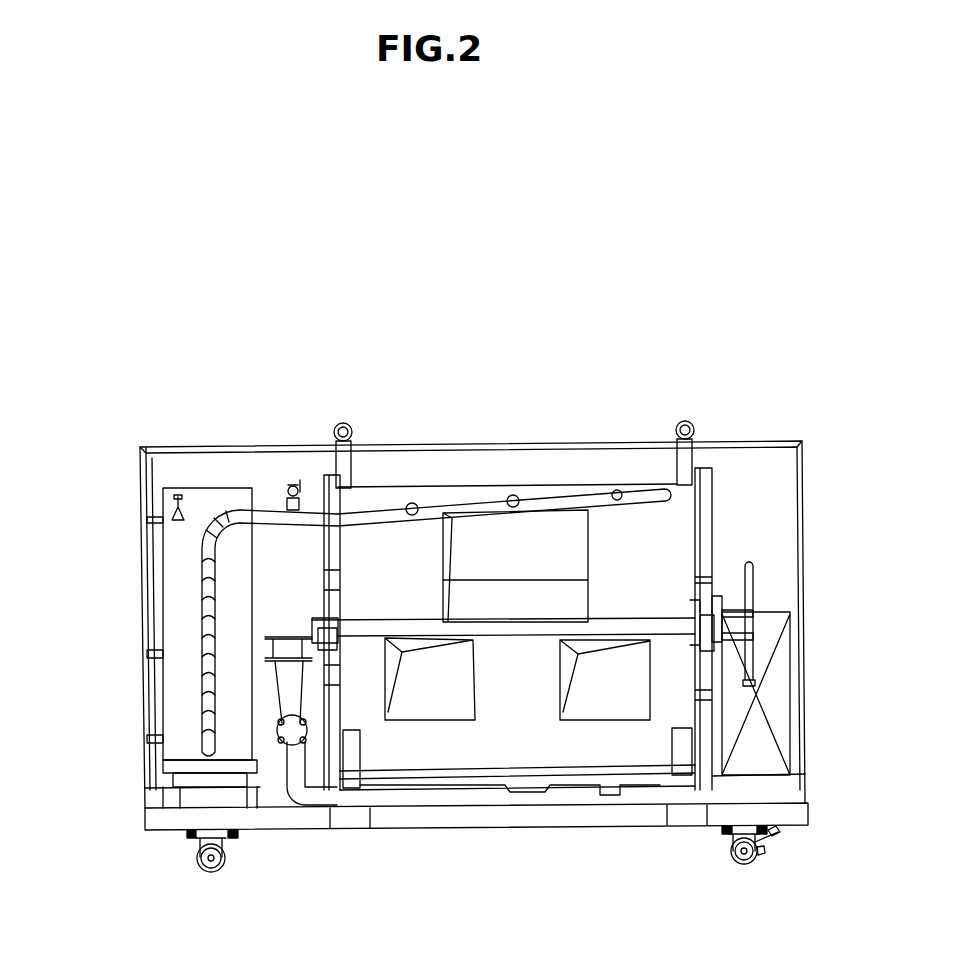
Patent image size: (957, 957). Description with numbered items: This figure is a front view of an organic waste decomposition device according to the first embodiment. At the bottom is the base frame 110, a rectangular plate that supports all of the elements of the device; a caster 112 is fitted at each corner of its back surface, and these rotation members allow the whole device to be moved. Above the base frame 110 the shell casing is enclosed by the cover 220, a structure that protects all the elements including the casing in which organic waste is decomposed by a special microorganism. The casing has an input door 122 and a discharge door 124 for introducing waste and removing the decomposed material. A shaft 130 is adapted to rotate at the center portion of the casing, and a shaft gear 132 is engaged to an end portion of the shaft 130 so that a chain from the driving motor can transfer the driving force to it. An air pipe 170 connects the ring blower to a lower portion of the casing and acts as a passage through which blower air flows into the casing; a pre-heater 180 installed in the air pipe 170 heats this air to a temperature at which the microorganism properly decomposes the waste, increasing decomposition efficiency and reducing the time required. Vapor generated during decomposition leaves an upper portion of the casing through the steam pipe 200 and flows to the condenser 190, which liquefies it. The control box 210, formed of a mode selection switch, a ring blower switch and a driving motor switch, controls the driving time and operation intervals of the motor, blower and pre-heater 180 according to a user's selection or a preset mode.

The base frame 110 is at (154, 823).
The caster 112 is at (742, 866).
The input door 122 is at (483, 516).
The discharge door 124 is at (432, 713).
The shaft 130 is at (650, 628).
The shaft gear 132 is at (754, 583).
The air pipe 170 is at (294, 792).
The pre-heater 180 is at (278, 722).
The condenser 190 is at (232, 496).
The steam pipe 200 is at (580, 500).
The control box 210 is at (768, 670).
The cover 220 is at (736, 442).